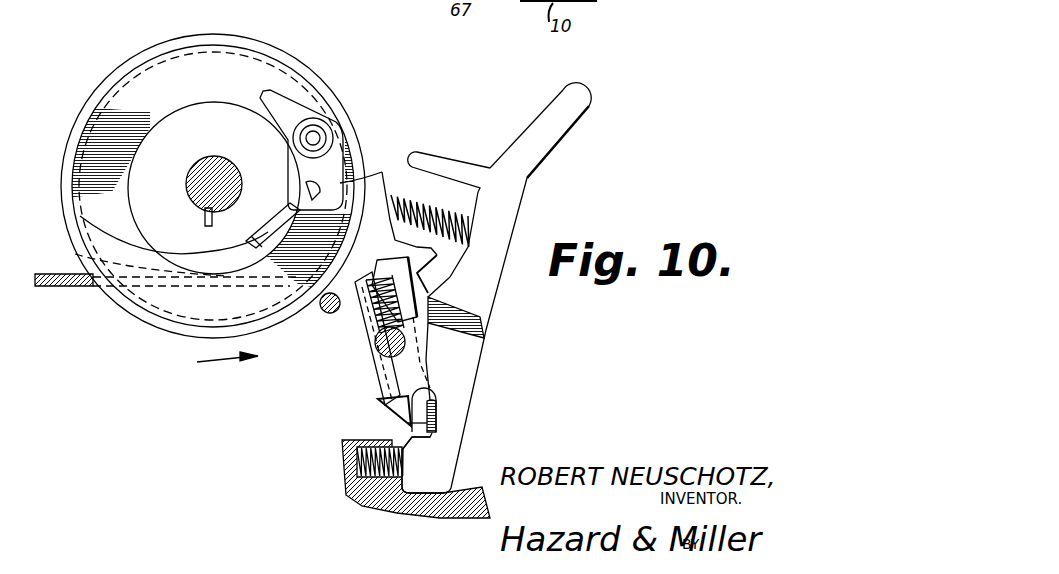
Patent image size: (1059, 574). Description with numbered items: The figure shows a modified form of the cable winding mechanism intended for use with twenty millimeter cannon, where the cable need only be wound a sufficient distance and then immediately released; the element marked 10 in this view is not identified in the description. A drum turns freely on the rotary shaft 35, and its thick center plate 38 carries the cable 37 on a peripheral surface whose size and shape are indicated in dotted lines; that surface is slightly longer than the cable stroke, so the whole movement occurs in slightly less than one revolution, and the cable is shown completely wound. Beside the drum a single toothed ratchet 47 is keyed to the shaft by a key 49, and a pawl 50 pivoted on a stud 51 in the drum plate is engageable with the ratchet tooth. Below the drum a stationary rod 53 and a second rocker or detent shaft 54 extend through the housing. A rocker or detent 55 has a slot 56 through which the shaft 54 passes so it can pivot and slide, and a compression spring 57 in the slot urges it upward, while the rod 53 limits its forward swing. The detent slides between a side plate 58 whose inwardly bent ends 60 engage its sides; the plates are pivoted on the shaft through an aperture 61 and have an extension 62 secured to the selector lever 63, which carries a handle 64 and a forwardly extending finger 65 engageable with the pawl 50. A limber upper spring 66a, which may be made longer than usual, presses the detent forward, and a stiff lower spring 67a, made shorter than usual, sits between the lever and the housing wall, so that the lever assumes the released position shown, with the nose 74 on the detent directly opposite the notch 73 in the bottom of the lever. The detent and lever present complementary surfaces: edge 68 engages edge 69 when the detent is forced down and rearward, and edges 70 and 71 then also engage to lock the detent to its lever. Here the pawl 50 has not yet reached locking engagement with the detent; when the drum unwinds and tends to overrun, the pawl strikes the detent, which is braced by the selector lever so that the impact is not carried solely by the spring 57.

The base 10 is at (423, 518).
The rotary shaft 35 is at (217, 164).
The cable 37 is at (72, 290).
The thick center plate 38 is at (223, 55).
The single toothed ratchet 47 is at (177, 115).
The key 49 is at (204, 216).
The pawl 50 is at (288, 105).
The stud 51 is at (316, 138).
The stationary rod 53 is at (318, 301).
The rocker or detent shaft 54 is at (387, 373).
The rocker or detent 55 is at (382, 164).
The slot 56 is at (382, 290).
The compression spring 57 is at (375, 300).
The side plate 58 is at (385, 377).
The inwardly bent end 60 is at (388, 252).
The aperture 61 is at (385, 345).
The extension 62 is at (467, 379).
The selector lever 63 is at (478, 318).
The handle 64 is at (582, 101).
The forwardly extending finger 65 is at (428, 158).
The compression spring 66a is at (443, 203).
The compression spring 67a is at (380, 467).
The edge 68 is at (433, 258).
The edge 69 is at (450, 277).
The edge 70 is at (437, 408).
The edge 71 is at (402, 450).
The notch 73 is at (430, 437).
The nose 74 is at (408, 420).